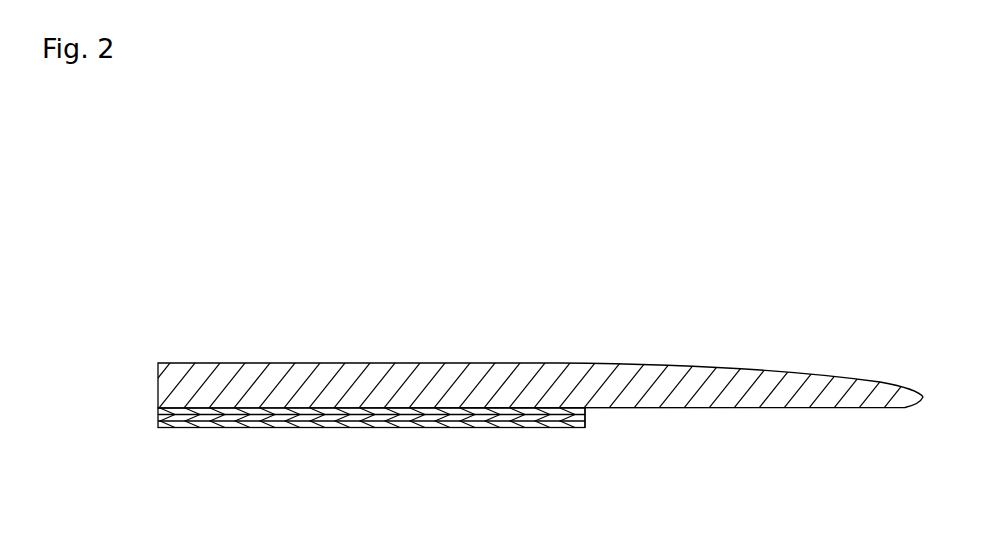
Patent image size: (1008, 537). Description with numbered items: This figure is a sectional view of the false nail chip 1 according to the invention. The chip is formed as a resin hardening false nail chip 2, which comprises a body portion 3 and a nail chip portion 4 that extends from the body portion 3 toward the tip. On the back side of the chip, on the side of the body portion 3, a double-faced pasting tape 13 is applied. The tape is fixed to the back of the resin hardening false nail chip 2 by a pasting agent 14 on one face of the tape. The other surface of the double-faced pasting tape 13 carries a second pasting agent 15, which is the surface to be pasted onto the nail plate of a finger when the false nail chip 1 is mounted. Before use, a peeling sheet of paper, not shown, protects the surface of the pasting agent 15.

The false nail chip 1 is at (488, 324).
The resin hardening false nail chip 2 is at (544, 362).
The body portion 3 is at (310, 382).
The nail chip portion 4 is at (815, 388).
The double-faced pasting tape 13 is at (317, 433).
The pasting agent 14 is at (586, 410).
The pasting agent 15 is at (508, 428).